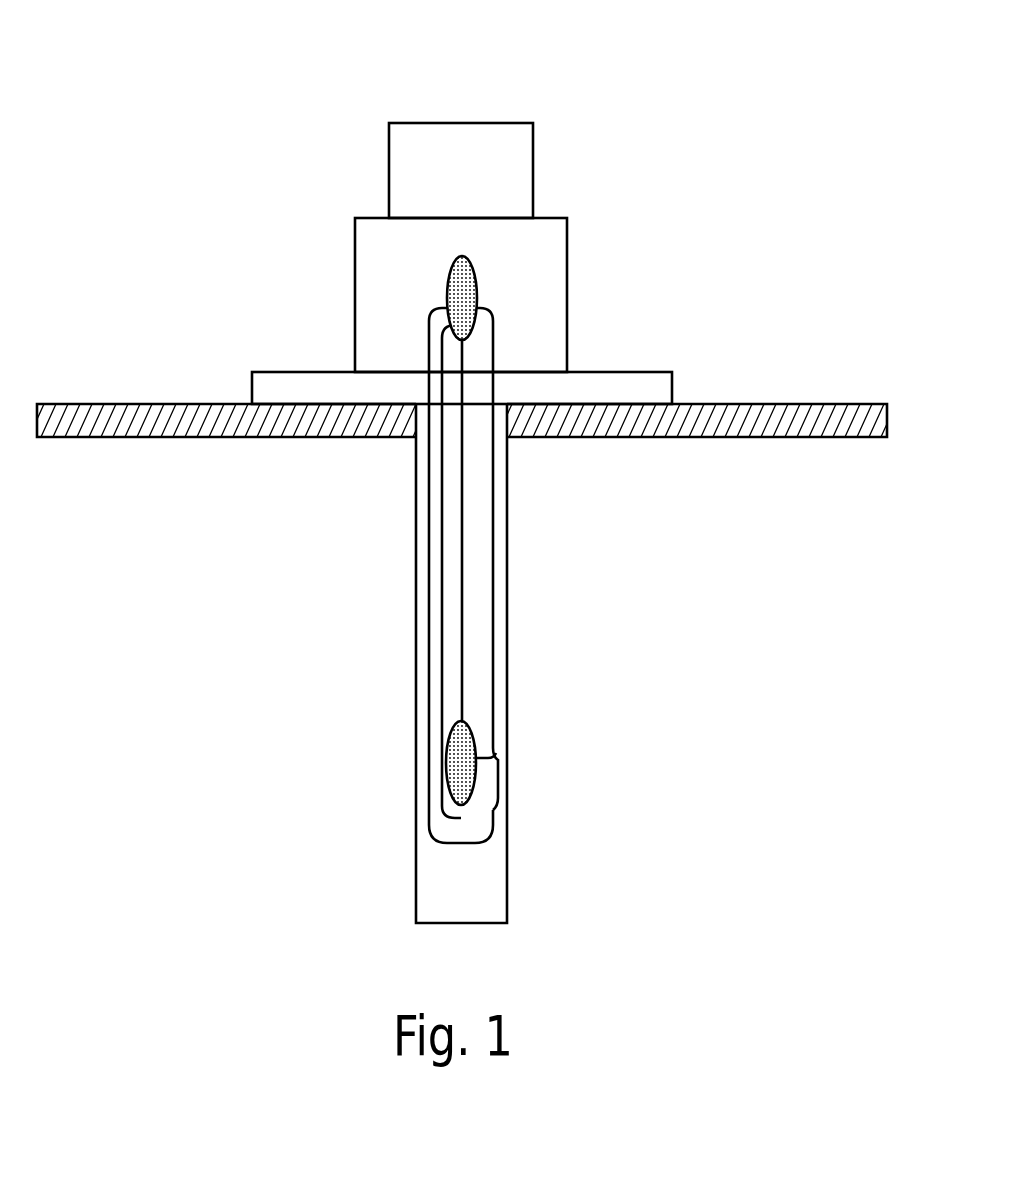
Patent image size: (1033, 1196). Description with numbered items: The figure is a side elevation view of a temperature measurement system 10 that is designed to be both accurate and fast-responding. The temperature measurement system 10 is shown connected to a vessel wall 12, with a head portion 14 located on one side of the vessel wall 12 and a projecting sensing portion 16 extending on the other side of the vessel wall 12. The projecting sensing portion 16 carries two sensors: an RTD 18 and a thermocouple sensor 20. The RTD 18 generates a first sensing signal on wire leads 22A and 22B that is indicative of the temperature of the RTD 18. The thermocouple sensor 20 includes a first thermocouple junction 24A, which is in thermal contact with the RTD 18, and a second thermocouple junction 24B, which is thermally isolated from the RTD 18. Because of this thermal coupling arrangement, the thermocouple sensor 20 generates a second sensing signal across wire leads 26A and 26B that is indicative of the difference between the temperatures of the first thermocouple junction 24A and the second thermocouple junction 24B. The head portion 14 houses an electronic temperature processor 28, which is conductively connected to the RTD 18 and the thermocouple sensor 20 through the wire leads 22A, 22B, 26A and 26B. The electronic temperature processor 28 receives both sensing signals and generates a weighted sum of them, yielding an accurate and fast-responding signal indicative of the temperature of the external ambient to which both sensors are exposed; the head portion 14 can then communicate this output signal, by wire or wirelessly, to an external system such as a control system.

The temperature measurement system 10 is at (731, 95).
The vessel wall 12 is at (790, 425).
The head portion 14 is at (355, 263).
The projecting sensing portion 16 is at (416, 543).
The RTD 18 is at (479, 726).
The thermocouple sensor 20 is at (527, 770).
The wire lead 22A is at (462, 464).
The wire lead 22B is at (442, 518).
The first thermocouple junction 24A is at (501, 756).
The second thermocouple junction 24B is at (520, 803).
The wire lead 26A is at (429, 637).
The wire lead 26B is at (492, 616).
The electronic temperature processor 28 is at (490, 279).